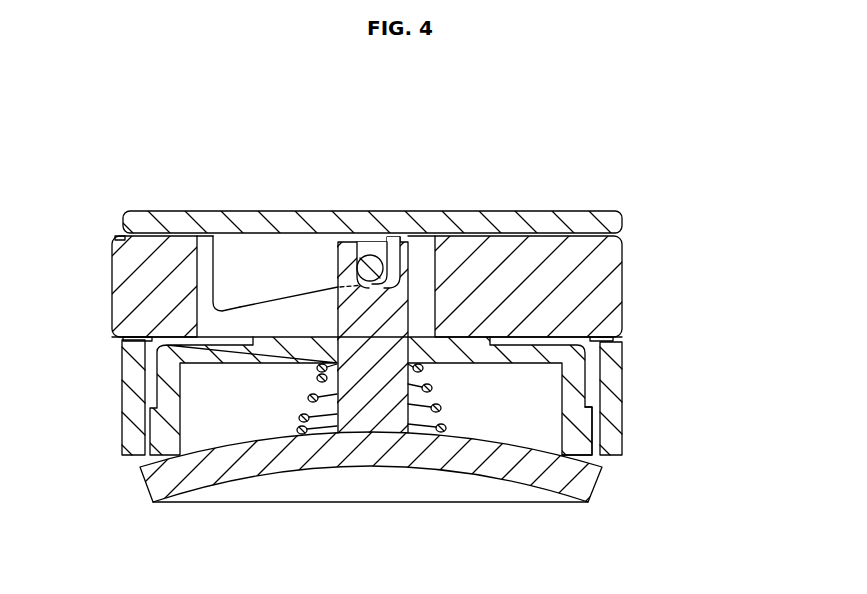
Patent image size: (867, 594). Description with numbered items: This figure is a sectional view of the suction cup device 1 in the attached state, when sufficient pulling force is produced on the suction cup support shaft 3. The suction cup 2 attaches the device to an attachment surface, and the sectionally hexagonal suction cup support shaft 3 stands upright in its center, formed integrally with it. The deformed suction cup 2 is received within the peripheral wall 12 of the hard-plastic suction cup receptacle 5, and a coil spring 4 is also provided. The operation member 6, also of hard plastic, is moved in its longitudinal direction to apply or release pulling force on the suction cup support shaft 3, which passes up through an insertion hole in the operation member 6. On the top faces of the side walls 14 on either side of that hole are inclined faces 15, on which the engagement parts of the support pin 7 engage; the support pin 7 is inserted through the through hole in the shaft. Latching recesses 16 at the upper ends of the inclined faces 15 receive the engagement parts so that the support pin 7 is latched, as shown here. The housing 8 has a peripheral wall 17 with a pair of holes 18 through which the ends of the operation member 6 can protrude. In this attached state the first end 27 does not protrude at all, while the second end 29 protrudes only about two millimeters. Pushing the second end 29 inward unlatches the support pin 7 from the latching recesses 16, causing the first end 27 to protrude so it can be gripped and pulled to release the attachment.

The suction cup device 1 is at (147, 205).
The suction cup 2 is at (235, 475).
The suction cup support shaft 3 is at (400, 397).
The coil spring 4 is at (300, 418).
The suction cup receptacle 5 is at (563, 412).
The operation member 6 is at (541, 255).
The support pin 7 is at (378, 253).
The housing 8 is at (623, 397).
The peripheral wall 12 is at (581, 440).
The side walls 14 is at (307, 313).
The inclined faces 15 is at (275, 302).
The latching recesses 16 is at (407, 237).
The peripheral wall 17 is at (130, 380).
The holes 18 is at (120, 338).
The first end 27 is at (618, 278).
The second end 29 is at (118, 283).